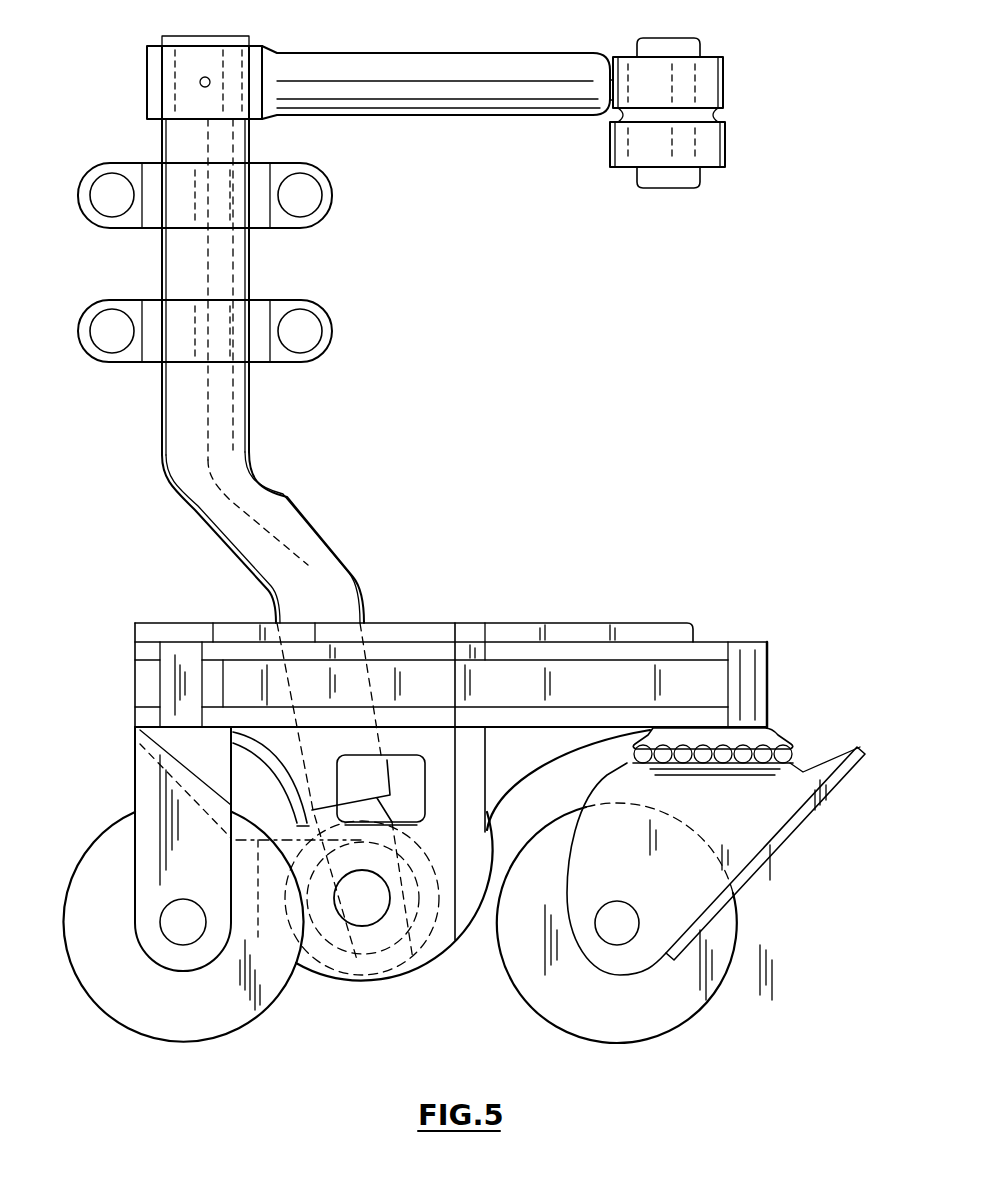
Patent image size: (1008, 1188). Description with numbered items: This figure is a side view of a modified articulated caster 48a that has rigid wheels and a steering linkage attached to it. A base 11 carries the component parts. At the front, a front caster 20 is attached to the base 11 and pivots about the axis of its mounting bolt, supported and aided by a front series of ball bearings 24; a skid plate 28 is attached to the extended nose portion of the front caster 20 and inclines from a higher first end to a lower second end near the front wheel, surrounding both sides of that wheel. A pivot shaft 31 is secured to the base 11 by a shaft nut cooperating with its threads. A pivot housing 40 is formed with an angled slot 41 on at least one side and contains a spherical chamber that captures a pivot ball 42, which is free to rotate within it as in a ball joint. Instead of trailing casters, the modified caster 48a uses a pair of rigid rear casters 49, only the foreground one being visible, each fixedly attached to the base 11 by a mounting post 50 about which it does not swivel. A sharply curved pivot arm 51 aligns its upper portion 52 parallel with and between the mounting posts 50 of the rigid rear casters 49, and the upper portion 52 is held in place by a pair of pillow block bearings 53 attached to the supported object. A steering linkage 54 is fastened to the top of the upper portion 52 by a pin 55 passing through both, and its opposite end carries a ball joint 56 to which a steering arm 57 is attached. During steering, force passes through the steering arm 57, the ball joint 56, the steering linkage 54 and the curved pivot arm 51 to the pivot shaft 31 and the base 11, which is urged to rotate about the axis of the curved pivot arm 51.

The base 11 is at (767, 682).
The front caster 20 is at (866, 751).
The front series of ball bearings 24 is at (794, 752).
The skid plate 28 is at (784, 853).
The pivot shaft 31 is at (380, 915).
The pivot housing 40 is at (437, 953).
The angled slot 41 is at (375, 960).
The pivot ball 42 is at (310, 960).
The modified articulated caster 48a is at (645, 549).
The rigid rear casters 49 is at (134, 790).
The mounting post 50 is at (147, 870).
The curved pivot arm 51 is at (337, 543).
The upper portion 52 is at (250, 267).
The pillow block bearings 53 is at (290, 229).
The steering linkage 54 is at (372, 52).
The pin 55 is at (210, 82).
The ball joint 56 is at (592, 170).
The steering arm 57 is at (726, 147).